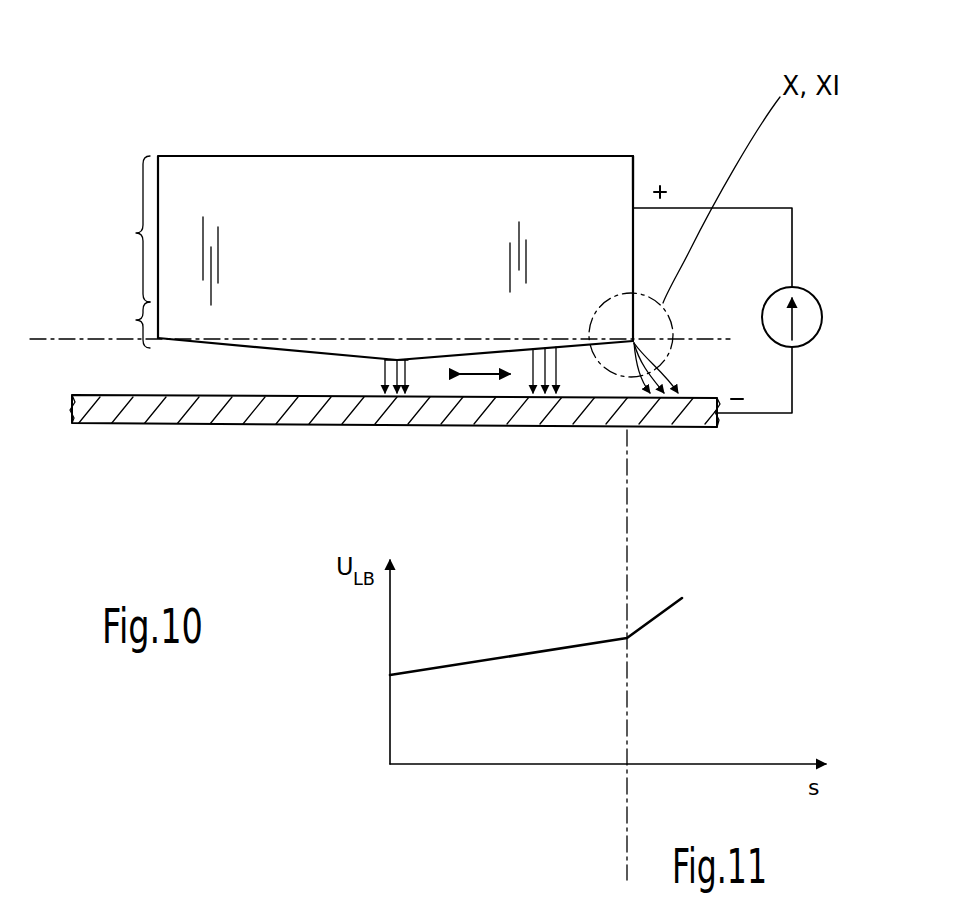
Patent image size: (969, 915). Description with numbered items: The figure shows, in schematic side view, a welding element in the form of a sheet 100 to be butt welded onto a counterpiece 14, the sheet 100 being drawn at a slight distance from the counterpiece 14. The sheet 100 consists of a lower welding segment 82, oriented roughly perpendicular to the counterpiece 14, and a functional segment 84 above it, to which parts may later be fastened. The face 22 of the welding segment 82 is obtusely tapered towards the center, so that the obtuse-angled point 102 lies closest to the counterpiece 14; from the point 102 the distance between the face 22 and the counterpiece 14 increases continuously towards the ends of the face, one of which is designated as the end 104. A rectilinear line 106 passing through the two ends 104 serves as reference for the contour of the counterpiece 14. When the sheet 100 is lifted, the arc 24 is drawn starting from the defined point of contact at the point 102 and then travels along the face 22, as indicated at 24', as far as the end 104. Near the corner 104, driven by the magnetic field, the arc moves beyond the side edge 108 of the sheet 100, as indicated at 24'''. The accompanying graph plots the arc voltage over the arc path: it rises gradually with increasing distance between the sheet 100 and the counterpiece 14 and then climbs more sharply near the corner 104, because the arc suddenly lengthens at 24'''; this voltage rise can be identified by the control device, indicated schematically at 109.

The sheet 100 is at (200, 175).
The functional segment 84 is at (126, 229).
The welding segment 82 is at (132, 325).
The line 106 is at (55, 337).
The side edge 108 is at (637, 168).
The end of the face 104 is at (634, 340).
The control device identification 109 is at (813, 296).
The counterpiece 14 is at (263, 415).
The face 22 is at (258, 354).
The obtuse-angled point 102 is at (395, 362).
The arc 24 is at (438, 440).
The arc position along the face 24' is at (575, 441).
The arc position beyond the side edge 24''' is at (696, 429).